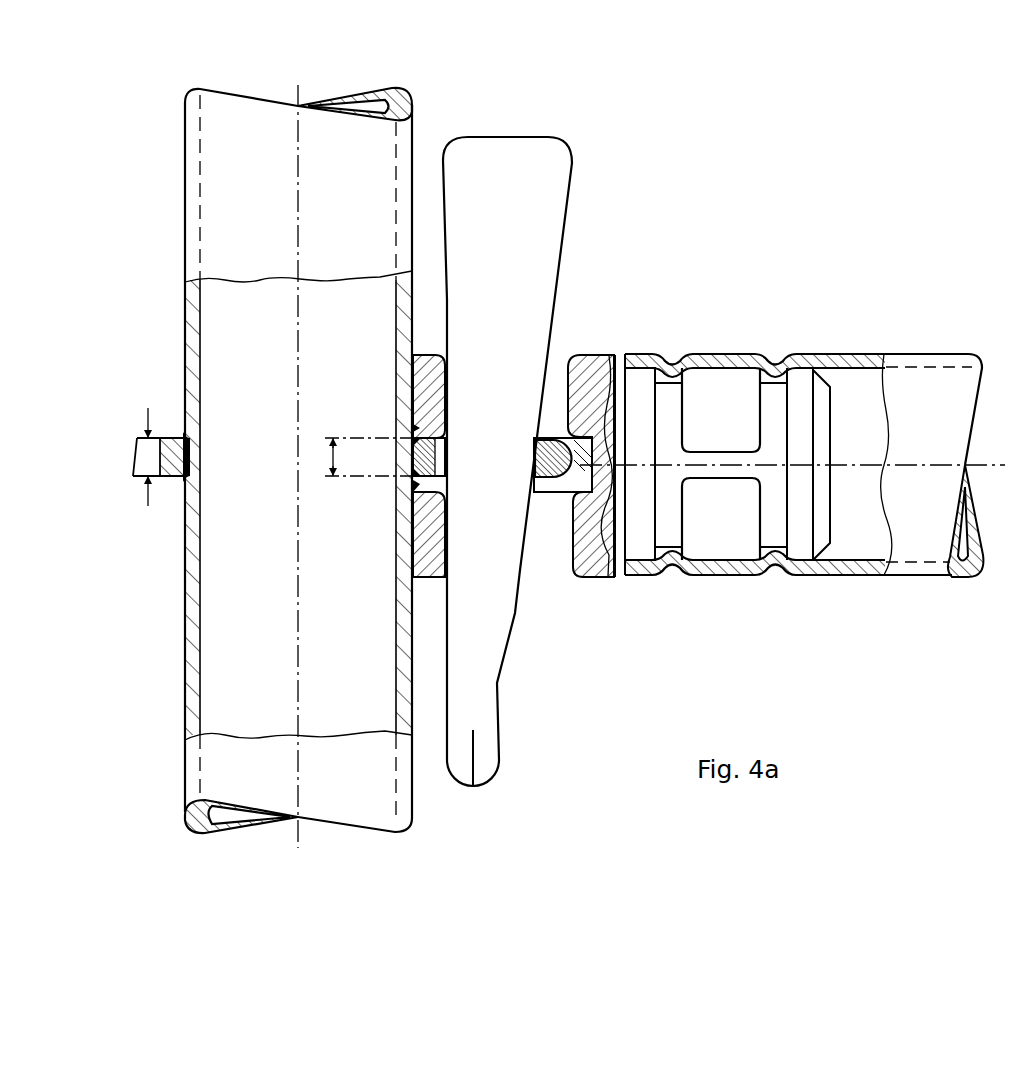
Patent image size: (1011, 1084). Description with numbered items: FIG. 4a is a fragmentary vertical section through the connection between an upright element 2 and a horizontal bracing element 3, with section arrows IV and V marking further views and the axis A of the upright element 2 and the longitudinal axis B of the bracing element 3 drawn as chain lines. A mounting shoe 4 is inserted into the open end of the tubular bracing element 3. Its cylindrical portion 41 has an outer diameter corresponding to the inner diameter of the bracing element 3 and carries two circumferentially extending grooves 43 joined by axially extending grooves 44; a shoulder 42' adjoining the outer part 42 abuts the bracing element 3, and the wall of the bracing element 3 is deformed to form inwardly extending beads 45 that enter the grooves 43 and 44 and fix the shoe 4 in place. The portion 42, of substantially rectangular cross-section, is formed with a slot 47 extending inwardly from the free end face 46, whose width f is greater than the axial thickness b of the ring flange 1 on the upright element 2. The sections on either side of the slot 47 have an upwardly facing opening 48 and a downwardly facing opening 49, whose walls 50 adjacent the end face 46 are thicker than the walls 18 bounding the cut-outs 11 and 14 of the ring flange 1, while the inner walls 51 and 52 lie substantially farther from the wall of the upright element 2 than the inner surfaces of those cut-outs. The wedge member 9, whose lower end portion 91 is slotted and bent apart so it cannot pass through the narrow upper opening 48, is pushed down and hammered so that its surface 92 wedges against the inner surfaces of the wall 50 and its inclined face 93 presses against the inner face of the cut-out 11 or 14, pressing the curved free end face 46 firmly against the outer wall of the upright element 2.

The ring flange 1 is at (548, 480).
The upright element 2 is at (215, 178).
The bracing element 3 is at (926, 545).
The mounting shoe 4 is at (595, 353).
The wedge member 9 is at (498, 155).
The cut-out 11 is at (443, 457).
The cut-out 14 is at (481, 511).
The wall 18 is at (430, 462).
The cylindrical portion 41 is at (642, 538).
The outer part 42 is at (650, 512).
The shoulder 42' is at (697, 312).
The circumferentially extending grooves 43 is at (780, 530).
The axially extending grooves 44 is at (717, 460).
The inwardly extending beads 45 is at (773, 357).
The free end face 46 is at (413, 400).
The slot 47 is at (561, 483).
The opening 48 is at (552, 365).
The opening 49 is at (531, 558).
The walls 50 is at (427, 373).
The inner wall 51 is at (583, 402).
The inner wall 52 is at (593, 553).
The lower end portion 91 is at (463, 770).
The surface 92 is at (447, 260).
The inclined face 93 is at (565, 203).
The axis of first tube A is at (298, 658).
The longitudinal axis B is at (896, 465).
The axial thickness b is at (148, 453).
The width f is at (330, 458).
The section view IV direction IV is at (355, 378).
The section view V direction V is at (776, 195).